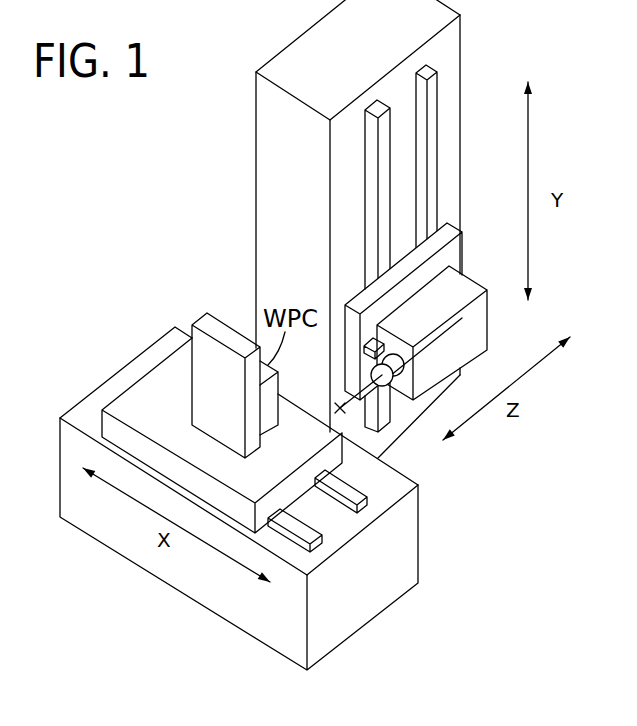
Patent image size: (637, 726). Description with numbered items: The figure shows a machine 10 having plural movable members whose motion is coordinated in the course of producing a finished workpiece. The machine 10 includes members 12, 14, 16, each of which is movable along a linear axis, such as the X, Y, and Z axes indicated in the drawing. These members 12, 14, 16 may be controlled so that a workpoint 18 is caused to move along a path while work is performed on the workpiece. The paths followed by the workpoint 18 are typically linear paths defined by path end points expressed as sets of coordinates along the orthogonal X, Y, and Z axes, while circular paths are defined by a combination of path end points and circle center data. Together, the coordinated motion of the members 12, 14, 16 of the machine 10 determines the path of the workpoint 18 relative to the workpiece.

The machine 10 is at (186, 243).
The member 12 is at (455, 252).
The member 14 is at (463, 343).
The member 16 is at (108, 382).
The workpoint 18 is at (338, 408).